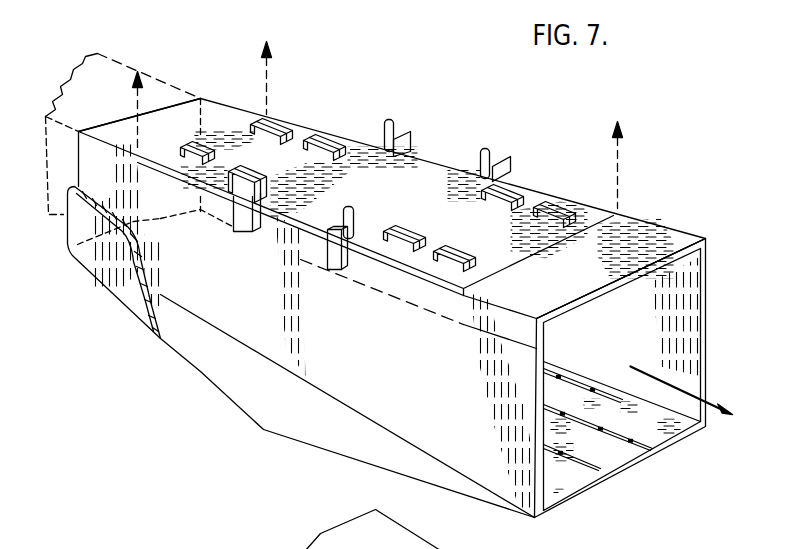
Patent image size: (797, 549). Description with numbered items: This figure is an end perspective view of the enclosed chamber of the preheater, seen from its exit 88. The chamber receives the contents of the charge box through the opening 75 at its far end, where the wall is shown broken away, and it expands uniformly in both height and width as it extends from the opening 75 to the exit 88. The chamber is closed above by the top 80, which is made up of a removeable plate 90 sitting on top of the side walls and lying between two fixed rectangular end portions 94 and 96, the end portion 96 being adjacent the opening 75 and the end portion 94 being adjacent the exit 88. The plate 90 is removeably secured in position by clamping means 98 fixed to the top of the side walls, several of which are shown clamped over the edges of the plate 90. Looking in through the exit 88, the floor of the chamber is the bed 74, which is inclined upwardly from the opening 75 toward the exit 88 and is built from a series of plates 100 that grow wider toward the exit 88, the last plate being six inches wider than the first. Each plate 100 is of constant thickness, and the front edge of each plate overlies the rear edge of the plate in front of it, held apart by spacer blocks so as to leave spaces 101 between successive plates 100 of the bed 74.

The bed 74 is at (562, 406).
The opening 75 is at (110, 116).
The top 80 is at (628, 170).
The exit 88 is at (668, 244).
The removeable plate 90 is at (452, 232).
The fixed rectangular end portion 94 is at (558, 266).
The fixed rectangular end portion 96 is at (172, 110).
The clamping means 98 is at (400, 122).
The plates 100 is at (620, 422).
The spaces 101 is at (580, 462).